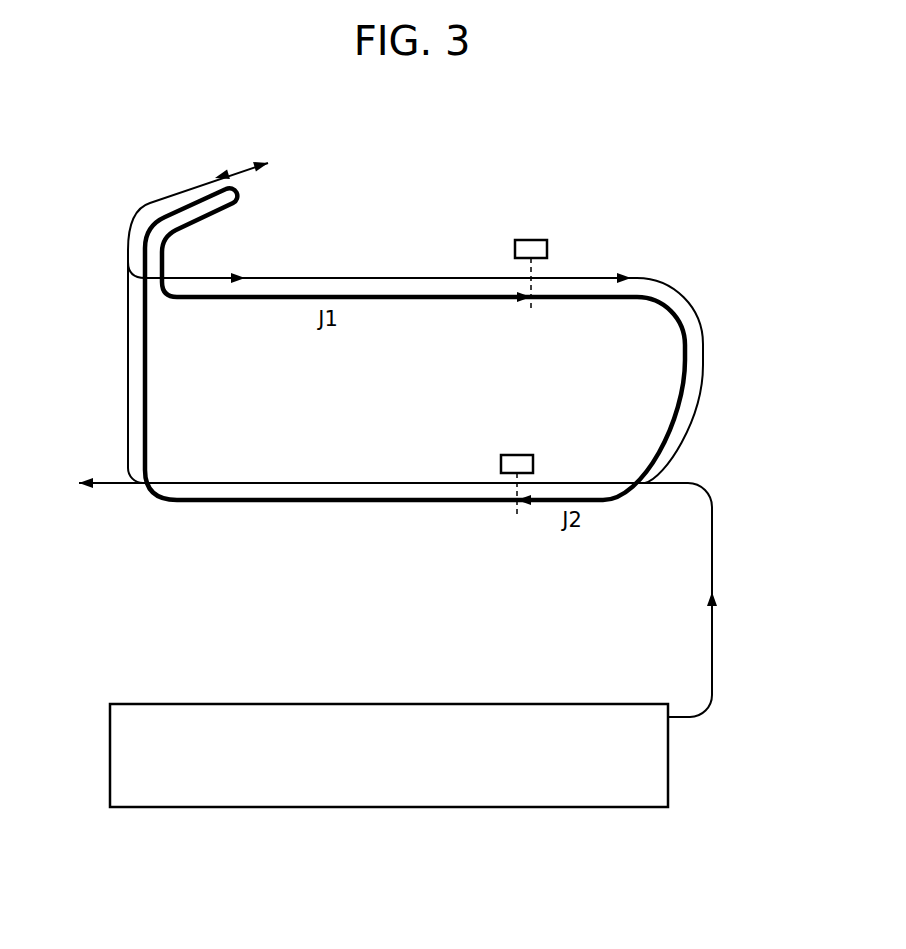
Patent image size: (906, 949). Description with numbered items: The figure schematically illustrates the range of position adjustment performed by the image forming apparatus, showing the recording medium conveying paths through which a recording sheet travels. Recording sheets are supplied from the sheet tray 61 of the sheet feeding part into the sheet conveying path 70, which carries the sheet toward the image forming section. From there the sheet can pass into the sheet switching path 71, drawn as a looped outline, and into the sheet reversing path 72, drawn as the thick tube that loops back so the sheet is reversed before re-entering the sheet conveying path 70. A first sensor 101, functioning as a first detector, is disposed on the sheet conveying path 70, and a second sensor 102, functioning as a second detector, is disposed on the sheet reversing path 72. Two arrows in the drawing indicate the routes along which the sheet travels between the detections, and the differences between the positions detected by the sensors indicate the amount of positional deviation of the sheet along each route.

The sheet tray 61 is at (110, 752).
The sheet conveying path 70 is at (713, 551).
The sheet switching path 71 is at (127, 366).
The sheet reversing path 72 is at (400, 278).
The first sensor 101 is at (517, 455).
The second sensor 102 is at (531, 240).